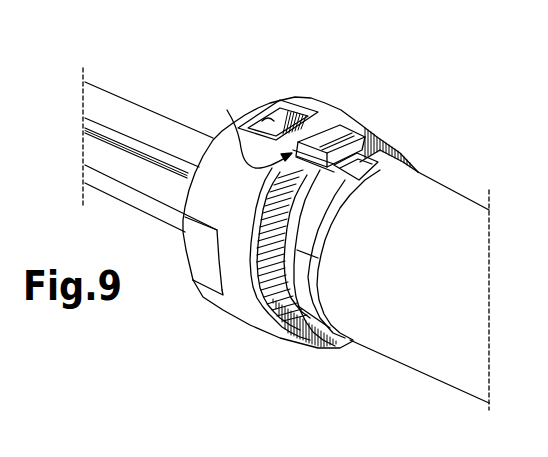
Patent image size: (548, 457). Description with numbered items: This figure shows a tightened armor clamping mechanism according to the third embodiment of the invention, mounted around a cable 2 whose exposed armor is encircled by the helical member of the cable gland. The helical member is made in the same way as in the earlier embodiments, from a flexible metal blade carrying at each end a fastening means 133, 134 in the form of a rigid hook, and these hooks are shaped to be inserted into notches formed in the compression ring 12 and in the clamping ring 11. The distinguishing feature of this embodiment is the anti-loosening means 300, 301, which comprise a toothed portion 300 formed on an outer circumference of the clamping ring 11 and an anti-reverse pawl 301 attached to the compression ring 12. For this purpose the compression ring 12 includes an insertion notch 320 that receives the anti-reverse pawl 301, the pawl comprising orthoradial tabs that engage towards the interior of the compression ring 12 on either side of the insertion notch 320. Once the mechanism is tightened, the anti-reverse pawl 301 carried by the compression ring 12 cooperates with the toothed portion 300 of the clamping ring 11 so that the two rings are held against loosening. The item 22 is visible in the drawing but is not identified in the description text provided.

The hose 22 is at (150, 124).
The compression ring 12 is at (233, 303).
The fastening means 133 is at (292, 113).
The insertion notch 320 is at (241, 122).
The anti-reverse pawl 301 is at (327, 137).
The fastening means 134 is at (357, 177).
The cable 2 is at (442, 213).
The toothed portion 300 is at (265, 317).
The clamping ring 11 is at (311, 296).